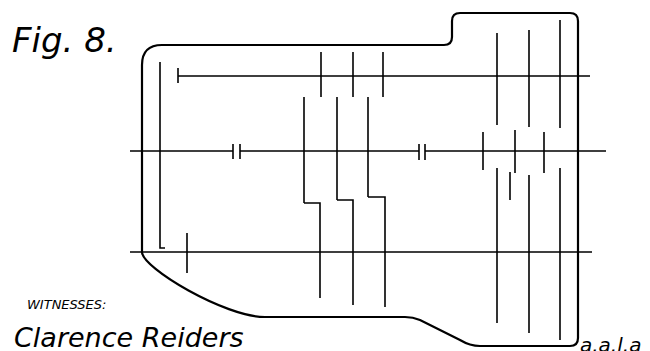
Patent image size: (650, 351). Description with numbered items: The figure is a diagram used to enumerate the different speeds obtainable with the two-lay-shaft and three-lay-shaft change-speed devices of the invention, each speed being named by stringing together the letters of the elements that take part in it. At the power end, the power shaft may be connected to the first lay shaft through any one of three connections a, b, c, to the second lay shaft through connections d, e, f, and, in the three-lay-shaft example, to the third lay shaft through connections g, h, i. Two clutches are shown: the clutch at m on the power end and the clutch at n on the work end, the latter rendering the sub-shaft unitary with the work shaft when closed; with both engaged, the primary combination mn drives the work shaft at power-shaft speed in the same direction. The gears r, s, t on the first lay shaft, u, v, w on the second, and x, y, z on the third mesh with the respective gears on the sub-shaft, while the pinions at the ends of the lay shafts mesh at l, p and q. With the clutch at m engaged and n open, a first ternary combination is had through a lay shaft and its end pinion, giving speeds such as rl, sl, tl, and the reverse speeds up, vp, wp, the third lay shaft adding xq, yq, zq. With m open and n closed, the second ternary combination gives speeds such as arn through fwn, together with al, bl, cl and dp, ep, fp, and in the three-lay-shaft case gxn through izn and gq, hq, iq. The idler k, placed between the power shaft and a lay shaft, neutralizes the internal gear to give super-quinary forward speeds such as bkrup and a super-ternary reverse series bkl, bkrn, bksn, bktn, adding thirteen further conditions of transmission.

The lay-shaft end pinion meshing point p is at (376, 67).
The third lay-shaft end pinion meshing point q is at (165, 155).
The work-end clutch n is at (235, 144).
The power-end clutch m is at (422, 144).
The lay-shaft end pinion meshing point l is at (361, 247).
The lay-shaft gear w is at (312, 75).
The lay-shaft gear v is at (345, 75).
The lay-shaft gear u is at (376, 75).
The third lay-shaft gear z is at (310, 150).
The third lay-shaft gear y is at (343, 148).
The third lay-shaft gear x is at (374, 147).
The lay-shaft gear t is at (312, 250).
The lay-shaft gear s is at (345, 252).
The lay-shaft gear r is at (376, 252).
The power-shaft to lay-shaft connection d is at (490, 79).
The power-shaft to lay-shaft connection e is at (521, 78).
The power-shaft to lay-shaft connection f is at (551, 74).
The power-shaft to third lay-shaft connection g is at (489, 151).
The power-shaft to third lay-shaft connection h is at (521, 151).
The power-shaft to third lay-shaft connection i is at (549, 152).
The power-shaft to lay-shaft connection a is at (491, 245).
The power-shaft to lay-shaft connection b is at (523, 249).
The power-shaft to lay-shaft connection c is at (554, 250).
The idler k is at (515, 186).